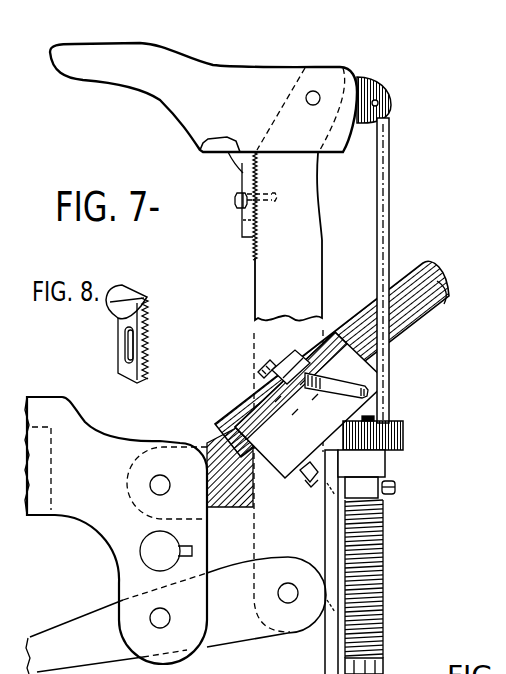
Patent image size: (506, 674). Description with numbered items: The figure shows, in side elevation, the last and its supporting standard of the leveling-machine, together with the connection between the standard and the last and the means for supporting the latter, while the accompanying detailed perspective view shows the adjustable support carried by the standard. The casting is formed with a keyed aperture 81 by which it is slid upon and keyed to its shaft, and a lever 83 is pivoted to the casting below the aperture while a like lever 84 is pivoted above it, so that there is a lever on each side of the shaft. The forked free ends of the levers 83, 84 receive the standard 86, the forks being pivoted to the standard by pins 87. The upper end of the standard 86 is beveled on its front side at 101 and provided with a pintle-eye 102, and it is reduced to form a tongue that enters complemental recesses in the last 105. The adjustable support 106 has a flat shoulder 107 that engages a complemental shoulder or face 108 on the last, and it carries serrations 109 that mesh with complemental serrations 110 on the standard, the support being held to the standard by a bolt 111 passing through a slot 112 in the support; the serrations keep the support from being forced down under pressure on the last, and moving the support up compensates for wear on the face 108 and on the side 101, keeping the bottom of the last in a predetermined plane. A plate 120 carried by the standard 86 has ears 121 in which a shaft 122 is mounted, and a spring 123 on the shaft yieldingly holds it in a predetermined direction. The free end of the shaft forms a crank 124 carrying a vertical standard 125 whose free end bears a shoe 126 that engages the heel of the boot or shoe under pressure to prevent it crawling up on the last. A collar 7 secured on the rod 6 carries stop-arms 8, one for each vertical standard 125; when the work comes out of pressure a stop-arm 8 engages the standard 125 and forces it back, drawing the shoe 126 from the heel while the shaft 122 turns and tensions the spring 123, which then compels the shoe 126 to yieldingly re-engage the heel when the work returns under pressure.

In FIG. 7, the rod 6 is at (425, 265).
In FIG. 7, the collar 7 is at (263, 393).
In FIG. 7, the stop-arm 8 is at (378, 389).
In FIG. 7, the keyed aperture 81 is at (160, 552).
In FIG. 7, the lever 83 is at (176, 615).
In FIG. 7, the lever 84 is at (203, 450).
In FIG. 7, the standard 86 is at (303, 273).
In FIG. 7, the pin 87 is at (288, 604).
In FIG. 7, the beveled front side 101 is at (293, 88).
In FIG. 7, the pintle-eye 102 is at (314, 90).
In FIG. 7, the last 105 is at (201, 76).
In FIG. 7, the adjustable support 106 is at (238, 174).
In FIG. 8, the adjustable support 106 is at (120, 336).
In FIG. 7, the flat shoulder 107 is at (200, 143).
In FIG. 8, the flat shoulder 107 is at (123, 293).
In FIG. 7, the shoulder or face 108 is at (222, 153).
In FIG. 8, the serrations 109 is at (147, 340).
In FIG. 7, the serrations 110 is at (251, 256).
In FIG. 7, the bolt 111 is at (238, 205).
In FIG. 8, the slot 112 is at (128, 354).
In FIG. 7, the plate 120 is at (328, 535).
In FIG. 7, the ear 121 is at (375, 462).
In FIG. 7, the shaft 122 is at (372, 418).
In FIG. 7, the spring 123 is at (383, 587).
In FIG. 7, the crank 124 is at (405, 440).
In FIG. 7, the vertical standard 125 is at (393, 367).
In FIG. 7, the shoe 126 is at (374, 90).